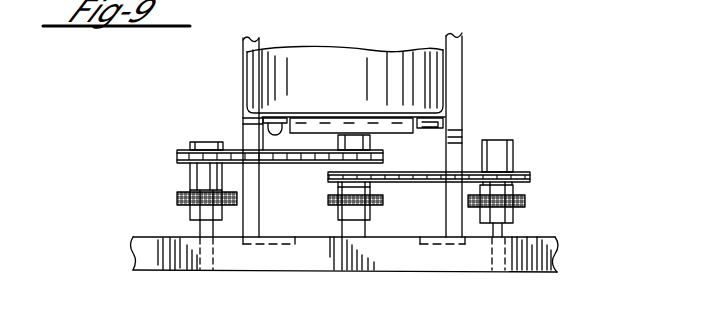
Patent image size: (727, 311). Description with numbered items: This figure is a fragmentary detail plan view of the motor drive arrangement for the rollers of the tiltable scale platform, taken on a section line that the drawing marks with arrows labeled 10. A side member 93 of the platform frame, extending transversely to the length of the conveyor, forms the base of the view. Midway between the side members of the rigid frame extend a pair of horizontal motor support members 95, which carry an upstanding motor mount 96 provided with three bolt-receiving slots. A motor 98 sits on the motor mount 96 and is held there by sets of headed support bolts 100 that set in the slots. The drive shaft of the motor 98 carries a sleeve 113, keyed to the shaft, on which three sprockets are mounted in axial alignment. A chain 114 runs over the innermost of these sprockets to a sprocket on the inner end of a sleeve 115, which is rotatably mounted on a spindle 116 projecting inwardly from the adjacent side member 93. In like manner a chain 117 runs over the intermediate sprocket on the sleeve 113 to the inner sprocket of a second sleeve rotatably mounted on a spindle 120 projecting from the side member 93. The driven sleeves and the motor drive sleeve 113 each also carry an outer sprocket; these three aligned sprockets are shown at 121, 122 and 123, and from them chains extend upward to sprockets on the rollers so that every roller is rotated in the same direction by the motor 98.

The side member 93 is at (397, 272).
The horizontal motor support member 95 is at (242, 128).
The motor 98 is at (370, 50).
The headed support bolt 100 is at (282, 128).
The motor mount 96 is at (402, 132).
The chain 114 is at (288, 165).
The chain 117 is at (398, 185).
The sleeve 115 is at (190, 173).
The sprocket 121 is at (190, 212).
The spindle 116 is at (213, 235).
The sleeve 113 is at (373, 215).
The sprocket 122 is at (338, 203).
The sprocket 123 is at (498, 208).
The spindle 120 is at (490, 222).
The section line 10 is at (171, 222).